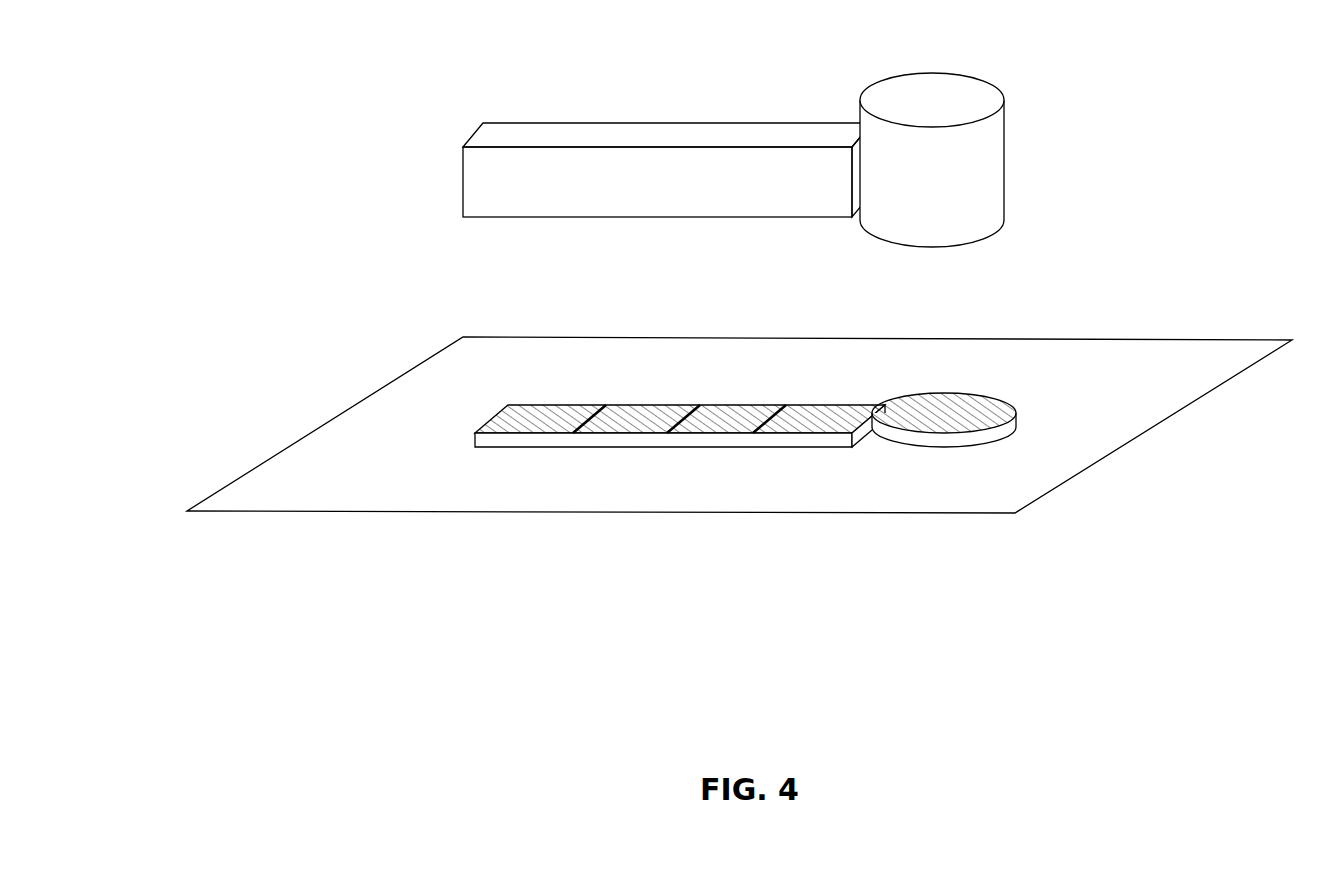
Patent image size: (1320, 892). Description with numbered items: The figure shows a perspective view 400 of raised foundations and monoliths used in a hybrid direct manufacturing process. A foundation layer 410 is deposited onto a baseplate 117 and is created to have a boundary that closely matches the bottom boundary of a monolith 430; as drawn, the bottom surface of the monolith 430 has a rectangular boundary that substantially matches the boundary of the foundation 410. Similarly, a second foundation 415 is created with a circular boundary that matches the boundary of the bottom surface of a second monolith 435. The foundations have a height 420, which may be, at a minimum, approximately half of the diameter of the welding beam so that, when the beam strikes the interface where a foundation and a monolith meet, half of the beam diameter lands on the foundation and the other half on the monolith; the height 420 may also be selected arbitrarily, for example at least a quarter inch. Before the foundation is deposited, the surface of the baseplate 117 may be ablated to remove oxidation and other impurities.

The baseplate 117 is at (1214, 379).
The assembly 400 is at (222, 648).
The foundation layer 410 is at (590, 412).
The foundation 415 is at (990, 410).
The height 420 is at (475, 445).
The monolith 430 is at (463, 178).
The monolith 435 is at (1005, 122).